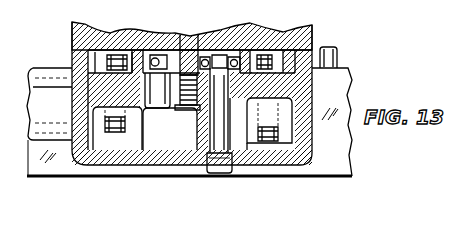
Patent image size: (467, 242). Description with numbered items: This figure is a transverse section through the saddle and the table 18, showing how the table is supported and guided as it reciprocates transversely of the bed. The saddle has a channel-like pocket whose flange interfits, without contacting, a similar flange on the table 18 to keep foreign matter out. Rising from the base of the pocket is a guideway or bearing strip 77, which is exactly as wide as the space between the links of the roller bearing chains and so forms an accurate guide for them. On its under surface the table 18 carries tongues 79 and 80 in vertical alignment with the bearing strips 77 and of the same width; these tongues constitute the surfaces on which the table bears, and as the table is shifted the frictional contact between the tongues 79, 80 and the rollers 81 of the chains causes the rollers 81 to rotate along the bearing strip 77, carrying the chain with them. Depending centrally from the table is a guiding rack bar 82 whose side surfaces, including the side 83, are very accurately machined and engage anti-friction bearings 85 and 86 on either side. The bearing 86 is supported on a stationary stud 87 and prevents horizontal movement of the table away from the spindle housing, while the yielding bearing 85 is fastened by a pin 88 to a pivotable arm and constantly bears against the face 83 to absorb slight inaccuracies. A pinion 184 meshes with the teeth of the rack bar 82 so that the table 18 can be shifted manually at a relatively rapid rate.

The table 18 is at (312, 29).
The guideway 77 is at (33, 87).
The tongue 79 is at (118, 50).
The tongue 80 is at (266, 55).
The roller 81 is at (120, 132).
The guiding rack bar 82 is at (190, 48).
The side surface 83 is at (276, 122).
The anti-friction bearing 85 is at (158, 52).
The anti-friction bearing 86 is at (203, 52).
The stationary stud 87 is at (232, 166).
The pin 88 is at (170, 110).
The pinion 184 is at (190, 115).